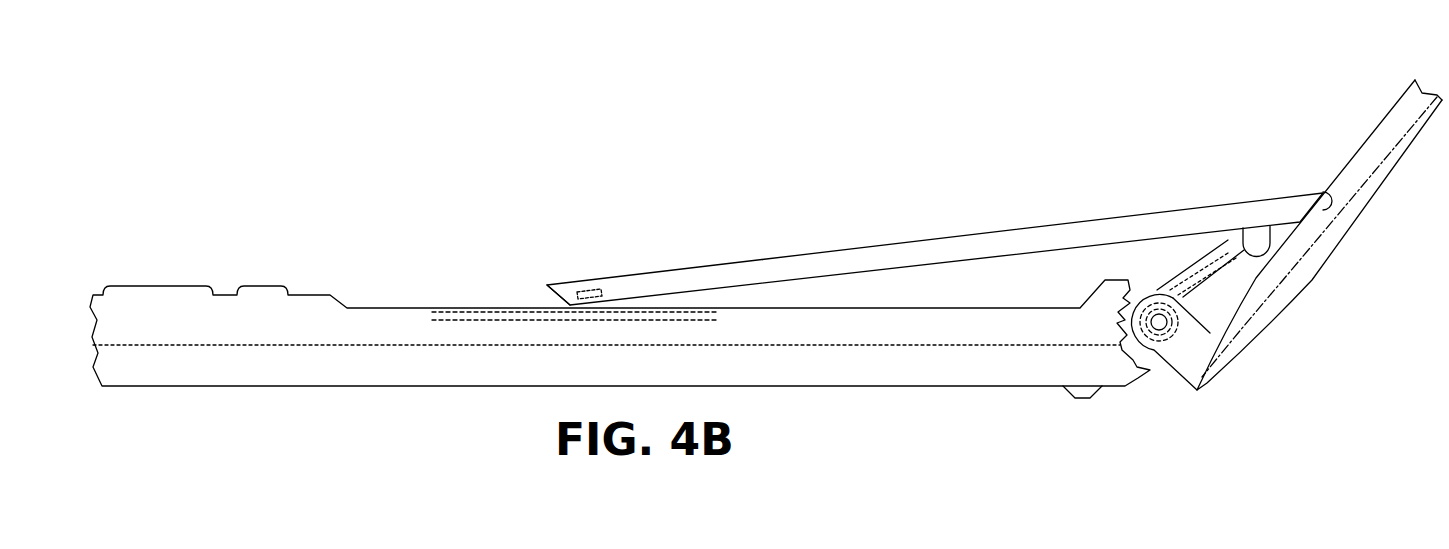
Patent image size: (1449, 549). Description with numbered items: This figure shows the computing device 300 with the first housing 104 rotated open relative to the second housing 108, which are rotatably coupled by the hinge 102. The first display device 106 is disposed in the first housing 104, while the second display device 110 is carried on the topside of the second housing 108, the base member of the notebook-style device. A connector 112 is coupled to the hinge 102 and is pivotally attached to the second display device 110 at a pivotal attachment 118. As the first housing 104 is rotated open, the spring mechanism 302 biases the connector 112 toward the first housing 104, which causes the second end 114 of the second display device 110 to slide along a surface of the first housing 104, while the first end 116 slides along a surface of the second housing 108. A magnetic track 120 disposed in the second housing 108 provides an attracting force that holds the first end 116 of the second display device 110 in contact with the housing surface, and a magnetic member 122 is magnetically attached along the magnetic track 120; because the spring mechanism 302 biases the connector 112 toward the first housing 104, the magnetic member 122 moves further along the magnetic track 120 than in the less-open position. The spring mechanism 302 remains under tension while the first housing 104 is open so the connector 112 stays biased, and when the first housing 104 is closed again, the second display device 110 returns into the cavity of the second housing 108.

The computing device 300 is at (749, 212).
The hinge 102 is at (1130, 322).
The first housing 104 is at (1337, 247).
The first display device 106 is at (1392, 110).
The second housing 108 is at (830, 388).
The second display device 110 is at (946, 237).
The connector 112 is at (1207, 258).
The second end 114 is at (1325, 192).
The first end 116 is at (547, 284).
The pivotal attachment 118 is at (1243, 230).
The magnetic track 120 is at (467, 305).
The magnetic member 122 is at (584, 288).
The spring mechanism 302 is at (1163, 358).